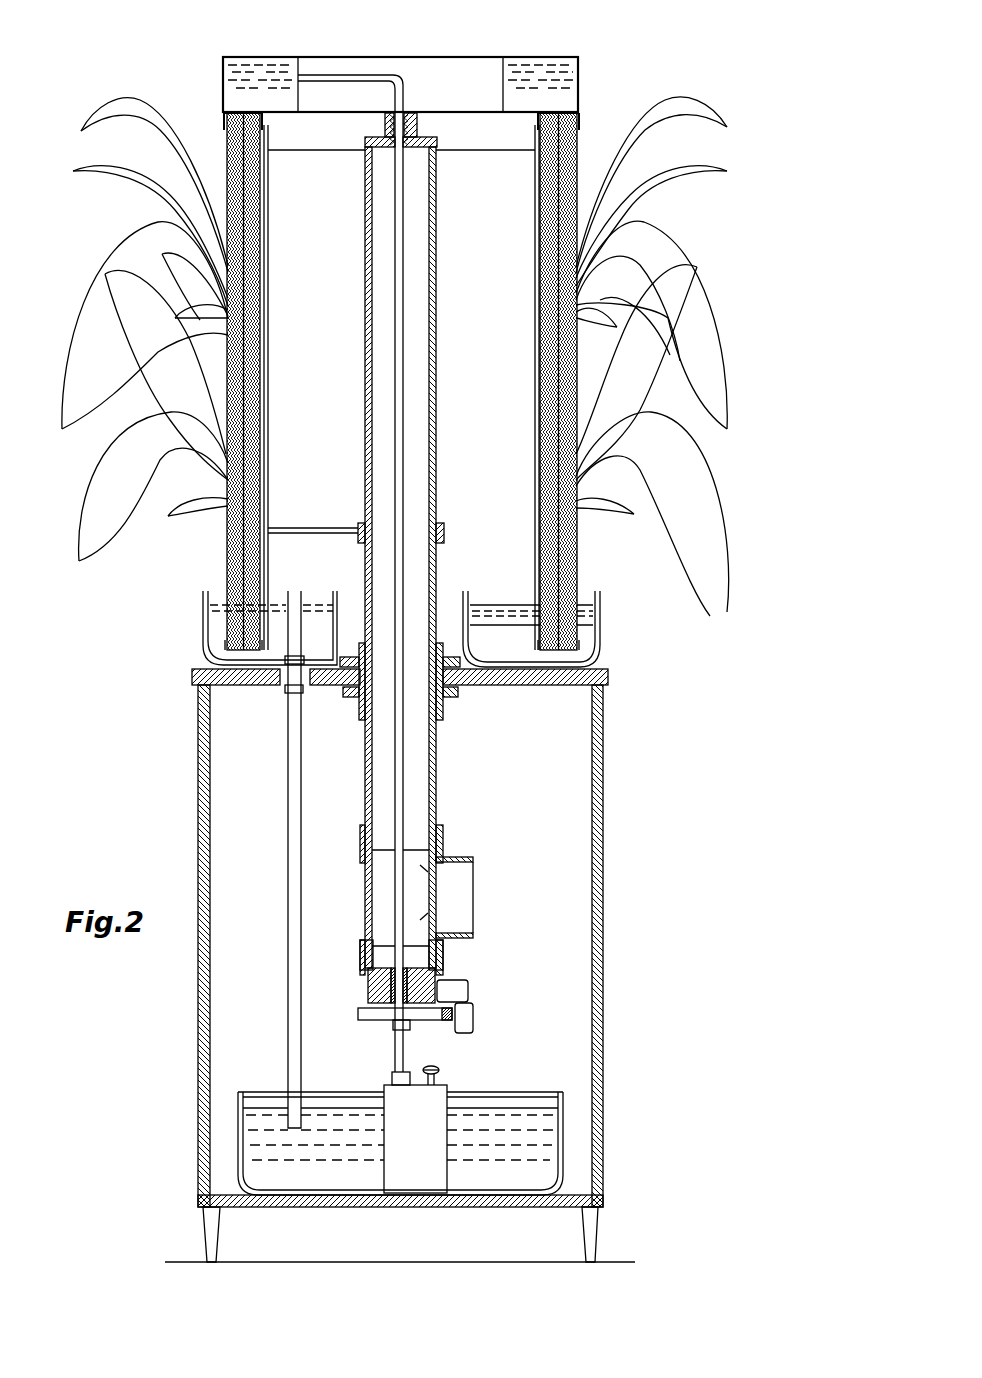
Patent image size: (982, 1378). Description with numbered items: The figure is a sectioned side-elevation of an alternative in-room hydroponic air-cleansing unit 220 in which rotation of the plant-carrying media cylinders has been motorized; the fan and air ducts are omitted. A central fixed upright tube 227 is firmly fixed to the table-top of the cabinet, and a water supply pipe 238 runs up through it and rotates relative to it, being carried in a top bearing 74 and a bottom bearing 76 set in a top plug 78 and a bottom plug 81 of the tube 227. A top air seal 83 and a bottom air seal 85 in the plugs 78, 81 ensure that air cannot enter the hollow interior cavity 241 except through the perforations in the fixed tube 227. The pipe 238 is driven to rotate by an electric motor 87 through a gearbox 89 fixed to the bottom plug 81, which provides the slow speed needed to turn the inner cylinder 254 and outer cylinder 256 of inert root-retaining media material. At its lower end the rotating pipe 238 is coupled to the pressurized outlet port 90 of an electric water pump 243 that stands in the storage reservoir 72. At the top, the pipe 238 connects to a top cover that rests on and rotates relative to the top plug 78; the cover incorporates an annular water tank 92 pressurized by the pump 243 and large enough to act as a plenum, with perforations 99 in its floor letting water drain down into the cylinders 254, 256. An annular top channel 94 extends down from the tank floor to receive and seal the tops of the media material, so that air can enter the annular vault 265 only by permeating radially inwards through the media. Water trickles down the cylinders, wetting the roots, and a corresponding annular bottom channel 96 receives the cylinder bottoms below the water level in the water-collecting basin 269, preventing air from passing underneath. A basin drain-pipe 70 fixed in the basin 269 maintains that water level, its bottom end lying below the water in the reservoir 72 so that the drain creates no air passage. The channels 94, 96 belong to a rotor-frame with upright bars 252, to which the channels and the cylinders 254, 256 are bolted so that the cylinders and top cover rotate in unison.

The air-cleansing unit 220 is at (643, 1038).
The top bearing 74 is at (407, 112).
The perforations in floor of pressurized water tank 99 is at (243, 112).
The annular water tank 92 is at (540, 100).
The top channel 94 is at (225, 128).
The bottom channel 96 is at (540, 635).
The annular vault 265 is at (507, 370).
The upright bars 252 is at (268, 477).
The inner cylinder 254 is at (252, 563).
The outer cylinder 256 is at (230, 572).
The water-collecting basin 269 is at (590, 640).
The basin drain-pipe 70 is at (293, 758).
The fixed upright tube 227 is at (365, 392).
The hollow interior cavity of tube 241 is at (413, 248).
The top plug 78 is at (380, 137).
The top air seal 83 is at (393, 147).
The water supply pipe 238 is at (370, 78).
The bottom bearing 76 is at (395, 963).
The bottom air seal 85 is at (391, 983).
The bottom plug 81 is at (377, 992).
The gearbox 89 is at (457, 988).
The electric motor 87 is at (465, 1018).
The outlet port of pump 90 is at (392, 1078).
The electric water pump 243 is at (437, 1150).
The storage reservoir 72 is at (258, 1142).